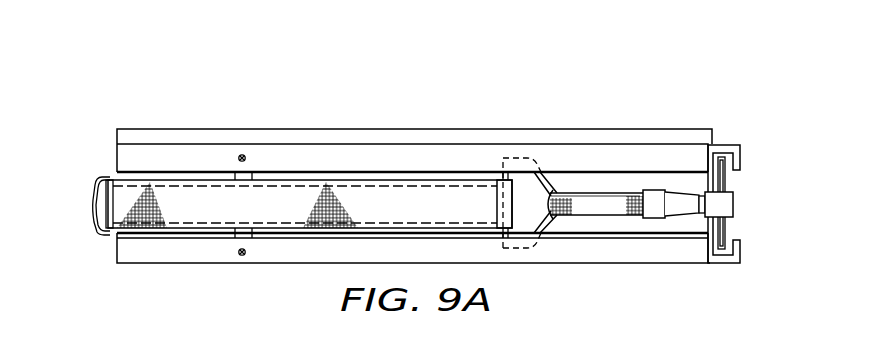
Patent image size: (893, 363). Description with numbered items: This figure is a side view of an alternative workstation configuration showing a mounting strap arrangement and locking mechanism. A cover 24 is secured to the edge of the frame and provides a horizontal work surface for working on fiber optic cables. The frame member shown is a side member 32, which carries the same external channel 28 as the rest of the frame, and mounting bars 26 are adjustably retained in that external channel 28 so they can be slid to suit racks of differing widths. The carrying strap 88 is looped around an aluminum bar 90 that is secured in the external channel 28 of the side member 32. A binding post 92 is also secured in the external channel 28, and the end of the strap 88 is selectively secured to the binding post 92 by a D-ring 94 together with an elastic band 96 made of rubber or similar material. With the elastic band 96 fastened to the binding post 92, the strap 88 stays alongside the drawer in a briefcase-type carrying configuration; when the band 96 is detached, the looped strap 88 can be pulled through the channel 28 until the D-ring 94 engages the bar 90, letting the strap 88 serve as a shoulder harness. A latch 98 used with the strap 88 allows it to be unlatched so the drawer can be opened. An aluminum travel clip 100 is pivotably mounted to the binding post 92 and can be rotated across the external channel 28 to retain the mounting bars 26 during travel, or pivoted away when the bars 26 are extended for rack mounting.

The cover 24 is at (179, 133).
The external channel 28 is at (160, 263).
The mounting bars 26 is at (731, 186).
The side member 32 is at (613, 232).
The carrying strap 88 is at (407, 180).
The aluminum bar 90 is at (232, 234).
The binding post 92 is at (655, 213).
The D-ring 94 is at (552, 178).
The elastic band 96 is at (592, 210).
The latch 98 is at (92, 207).
The travel clip 100 is at (735, 208).